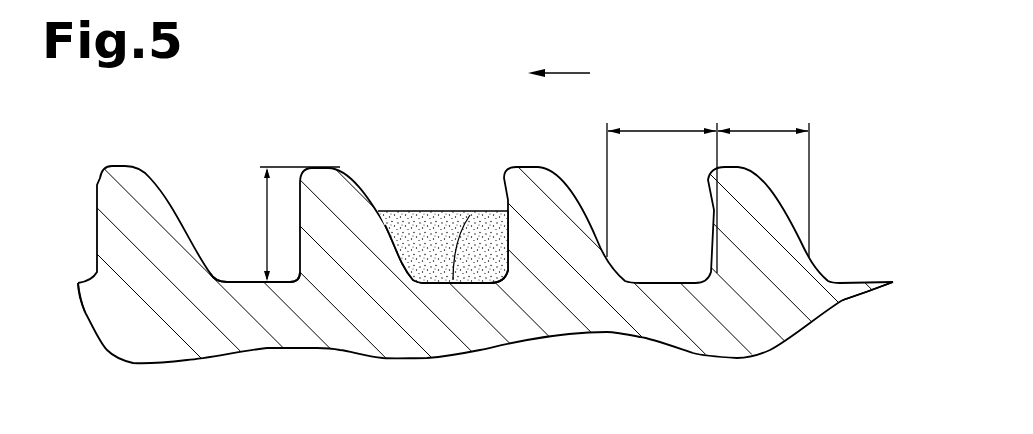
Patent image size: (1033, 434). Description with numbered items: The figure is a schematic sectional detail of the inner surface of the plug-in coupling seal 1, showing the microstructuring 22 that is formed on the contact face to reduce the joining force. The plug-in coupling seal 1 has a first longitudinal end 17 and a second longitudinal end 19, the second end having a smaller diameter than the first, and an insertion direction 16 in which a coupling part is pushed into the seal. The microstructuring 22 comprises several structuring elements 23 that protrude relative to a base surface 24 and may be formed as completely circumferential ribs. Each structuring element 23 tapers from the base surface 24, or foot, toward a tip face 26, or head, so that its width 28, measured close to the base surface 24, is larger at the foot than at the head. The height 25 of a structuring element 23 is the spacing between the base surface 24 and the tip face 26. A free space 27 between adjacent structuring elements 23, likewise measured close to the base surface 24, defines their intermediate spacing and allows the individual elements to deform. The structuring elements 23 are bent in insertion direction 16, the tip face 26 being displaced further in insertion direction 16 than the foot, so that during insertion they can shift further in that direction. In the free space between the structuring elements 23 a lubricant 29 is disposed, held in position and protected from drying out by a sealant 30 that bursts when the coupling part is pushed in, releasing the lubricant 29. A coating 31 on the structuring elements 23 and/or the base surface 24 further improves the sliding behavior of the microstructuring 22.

The plug-in coupling seal 1 is at (133, 347).
The insertion direction 16 is at (570, 72).
The first longitudinal end 17 is at (877, 310).
The second longitudinal end 19 is at (65, 335).
The microstructuring 22 is at (715, 53).
The structuring element 23 is at (533, 192).
The base surface 24 is at (243, 277).
The height 25 is at (263, 225).
The tip face 26 is at (320, 167).
The free space 27 is at (647, 128).
The width 28 is at (757, 128).
The lubricant 29 is at (497, 282).
The sealant 30 is at (415, 208).
The coating 31 is at (110, 165).